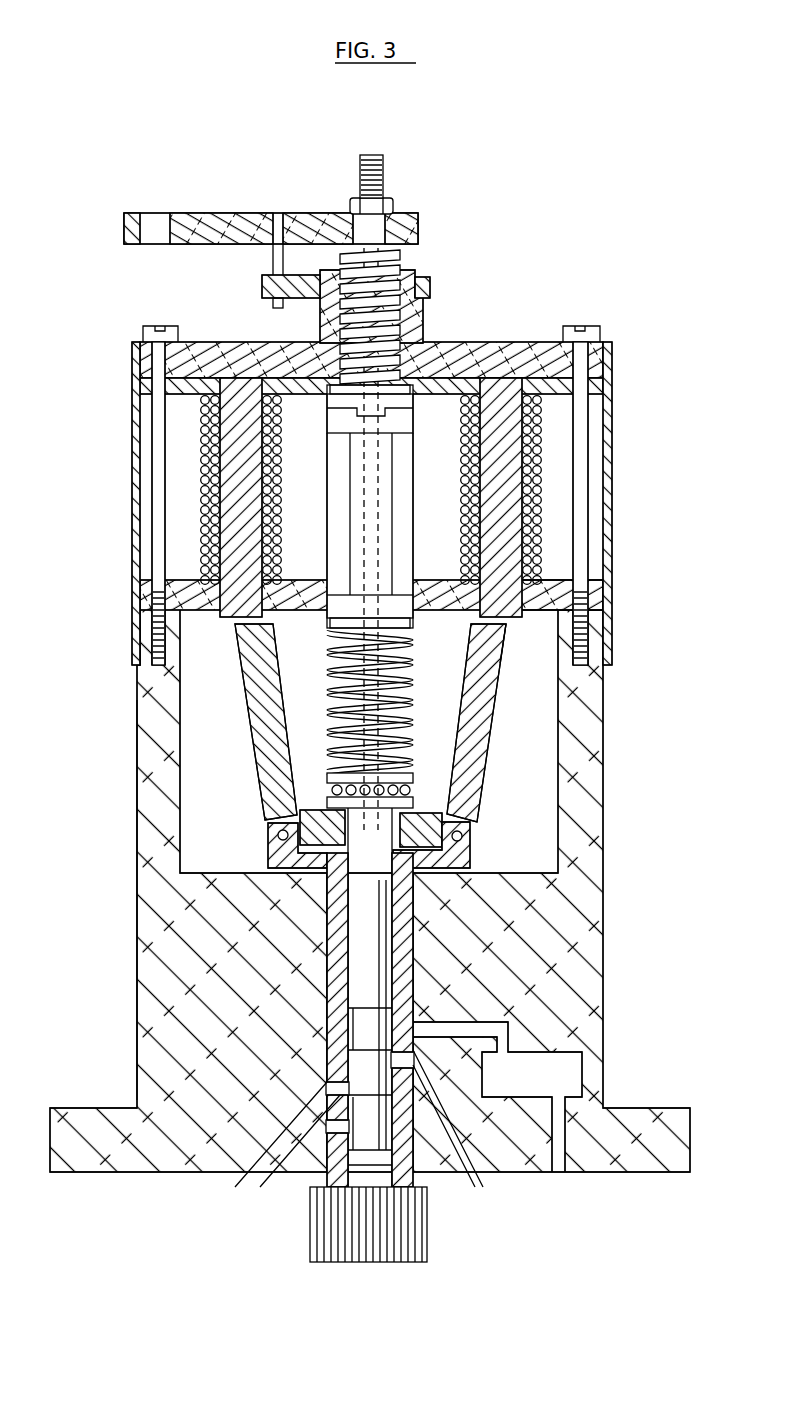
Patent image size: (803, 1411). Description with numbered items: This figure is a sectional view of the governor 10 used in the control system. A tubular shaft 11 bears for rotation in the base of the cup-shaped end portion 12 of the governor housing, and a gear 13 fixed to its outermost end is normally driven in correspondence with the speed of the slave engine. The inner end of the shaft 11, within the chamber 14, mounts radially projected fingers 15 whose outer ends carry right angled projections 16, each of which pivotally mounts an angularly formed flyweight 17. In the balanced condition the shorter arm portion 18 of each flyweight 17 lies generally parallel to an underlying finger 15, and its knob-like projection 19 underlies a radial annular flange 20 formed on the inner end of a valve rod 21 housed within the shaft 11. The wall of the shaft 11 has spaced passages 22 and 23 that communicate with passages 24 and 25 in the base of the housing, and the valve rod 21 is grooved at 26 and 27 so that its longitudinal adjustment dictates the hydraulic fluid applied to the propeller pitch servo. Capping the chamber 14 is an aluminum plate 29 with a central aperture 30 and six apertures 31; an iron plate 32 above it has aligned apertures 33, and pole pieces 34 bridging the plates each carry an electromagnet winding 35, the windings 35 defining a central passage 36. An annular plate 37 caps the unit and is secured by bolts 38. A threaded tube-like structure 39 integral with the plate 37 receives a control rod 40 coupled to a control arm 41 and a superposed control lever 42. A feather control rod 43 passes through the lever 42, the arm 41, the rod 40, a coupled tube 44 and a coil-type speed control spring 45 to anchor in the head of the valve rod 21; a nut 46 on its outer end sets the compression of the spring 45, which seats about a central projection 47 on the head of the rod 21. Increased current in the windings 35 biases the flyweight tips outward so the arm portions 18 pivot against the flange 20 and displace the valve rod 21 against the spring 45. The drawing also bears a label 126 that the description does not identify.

The governor 10 is at (136, 921).
The tubular shaft 11 is at (332, 1010).
The cup-shaped end portion of the governor housing 12 is at (593, 915).
The gear 13 is at (428, 1210).
The chamber 14 is at (225, 772).
The fingers 15 is at (470, 862).
The right angled projections 16 is at (463, 836).
The flyweight 17 is at (483, 733).
The shorter arm portion 18 is at (300, 813).
The knob-like projection 19 is at (342, 838).
The radial annular flange 20 is at (413, 805).
The valve rod 21 is at (380, 940).
The passage 22 is at (327, 1082).
The passage 23 is at (413, 1055).
The passage 24 is at (240, 1180).
The passage 25 is at (475, 1172).
The groove 26 is at (358, 1130).
The groove 27 is at (383, 1022).
The aluminum plate 29 is at (290, 600).
The central aperture 30 is at (400, 582).
The apertures 31 is at (522, 602).
The iron plate 32 is at (558, 395).
The apertures 33 is at (540, 385).
The pole pieces 34 is at (488, 505).
The electromagnet winding 35 is at (466, 440).
The central passage 36 is at (328, 513).
The annular plate 37 is at (222, 350).
The bolts 38 is at (585, 330).
The tube-like structure 39 is at (413, 337).
The control rod 40 is at (400, 262).
The control arm 41 is at (262, 286).
The control lever 42 is at (212, 222).
The feather control rod 43 is at (383, 176).
The tube 44 is at (358, 512).
The coil-type speed control spring 45 is at (413, 700).
The nut 46 is at (393, 208).
The central projection 47 is at (358, 812).
The wedge surface 126 is at (508, 630).